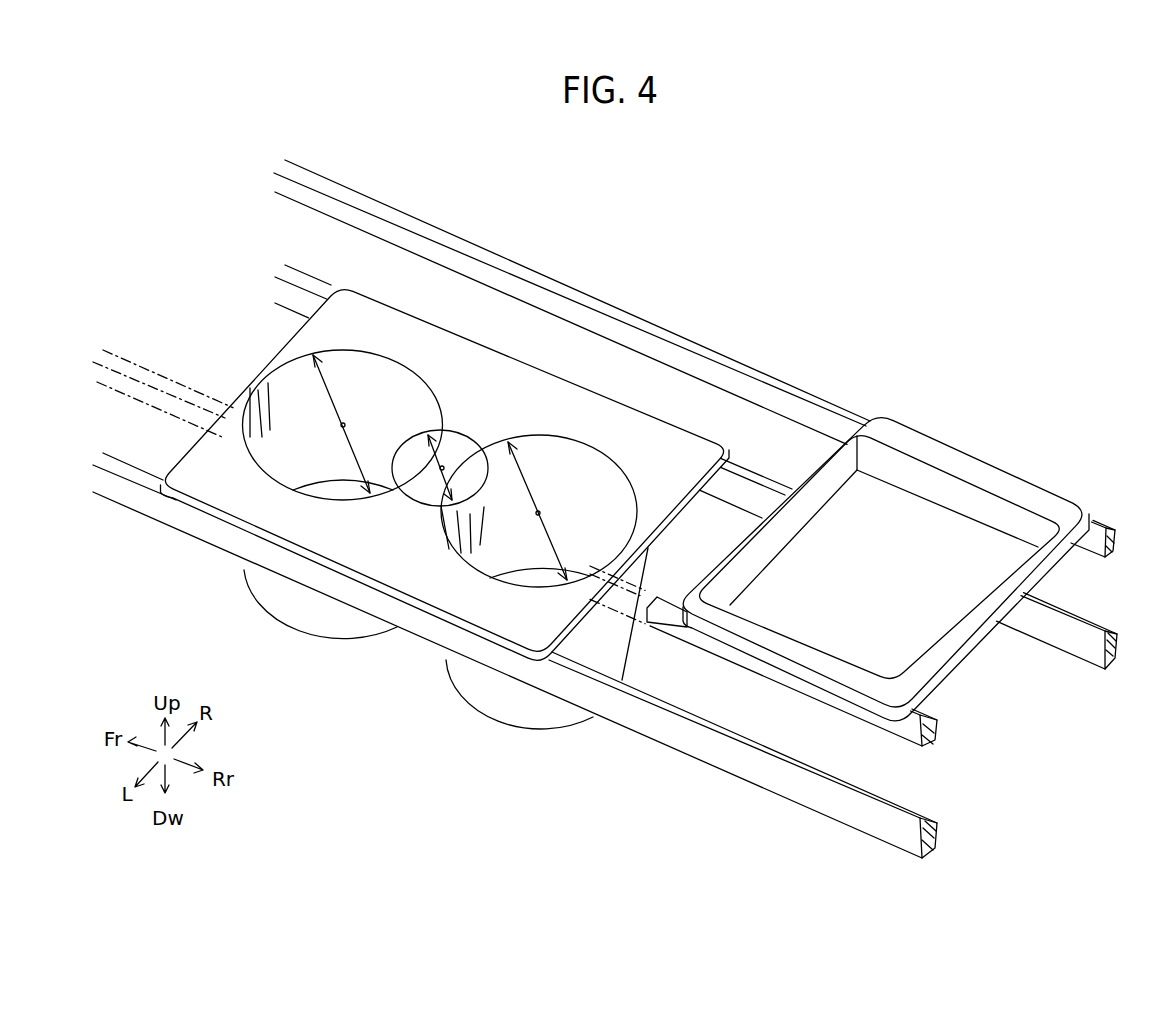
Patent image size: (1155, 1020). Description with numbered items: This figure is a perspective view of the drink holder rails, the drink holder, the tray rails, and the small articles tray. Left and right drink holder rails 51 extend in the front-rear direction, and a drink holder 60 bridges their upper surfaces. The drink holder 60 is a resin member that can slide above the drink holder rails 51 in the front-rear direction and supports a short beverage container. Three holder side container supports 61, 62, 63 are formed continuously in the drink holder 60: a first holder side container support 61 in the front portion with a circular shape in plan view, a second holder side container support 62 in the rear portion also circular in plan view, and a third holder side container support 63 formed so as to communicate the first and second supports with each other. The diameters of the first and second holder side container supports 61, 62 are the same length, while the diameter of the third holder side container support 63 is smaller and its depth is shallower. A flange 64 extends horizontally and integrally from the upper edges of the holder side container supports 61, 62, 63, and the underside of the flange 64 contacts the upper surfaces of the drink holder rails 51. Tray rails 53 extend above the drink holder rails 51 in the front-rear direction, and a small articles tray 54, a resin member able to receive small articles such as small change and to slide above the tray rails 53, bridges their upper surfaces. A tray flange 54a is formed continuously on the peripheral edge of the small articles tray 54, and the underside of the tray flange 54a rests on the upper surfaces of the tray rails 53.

The drink holder rail 51 is at (312, 277).
The tray rail 53 is at (790, 386).
The small articles tray 54 is at (868, 544).
The tray flange 54a is at (906, 441).
The drink holder 60 is at (445, 457).
The first holder side container support 61 is at (397, 381).
The second holder side container support 62 is at (606, 405).
The third holder side container support 63 is at (518, 374).
The flange 64 is at (593, 472).